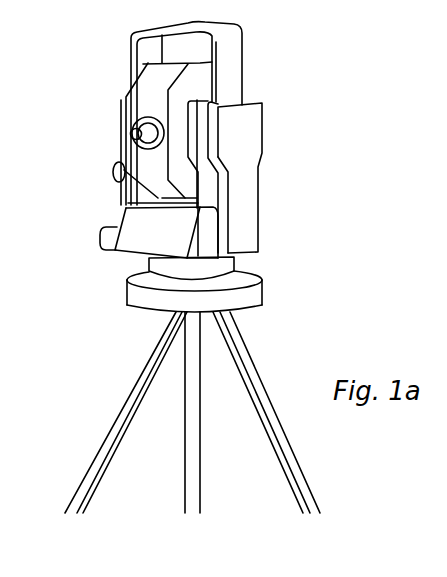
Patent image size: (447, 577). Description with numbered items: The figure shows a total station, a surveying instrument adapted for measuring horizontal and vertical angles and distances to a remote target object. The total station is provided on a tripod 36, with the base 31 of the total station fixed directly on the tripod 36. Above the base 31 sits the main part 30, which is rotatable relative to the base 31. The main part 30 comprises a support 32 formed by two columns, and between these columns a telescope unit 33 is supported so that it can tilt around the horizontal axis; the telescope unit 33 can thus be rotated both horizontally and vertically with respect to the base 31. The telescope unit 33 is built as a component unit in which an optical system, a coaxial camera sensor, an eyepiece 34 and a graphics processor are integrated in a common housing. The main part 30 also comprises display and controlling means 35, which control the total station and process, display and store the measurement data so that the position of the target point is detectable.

The main part 30 is at (352, 20).
The base 31 is at (140, 298).
The support 32 is at (248, 120).
The telescope unit 33 is at (165, 73).
The eyepiece 34 is at (133, 140).
The display and controlling means 35 is at (133, 241).
The tripod 36 is at (108, 438).